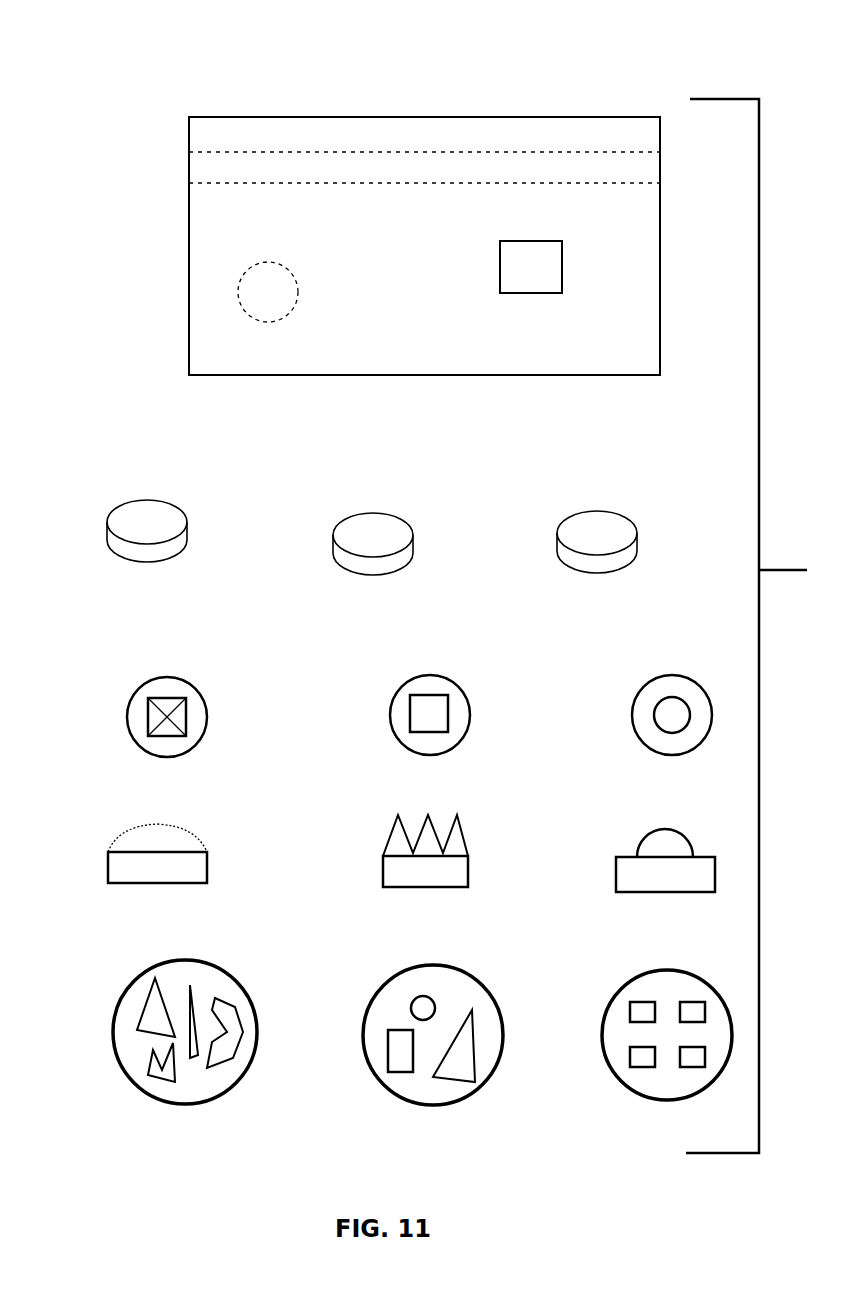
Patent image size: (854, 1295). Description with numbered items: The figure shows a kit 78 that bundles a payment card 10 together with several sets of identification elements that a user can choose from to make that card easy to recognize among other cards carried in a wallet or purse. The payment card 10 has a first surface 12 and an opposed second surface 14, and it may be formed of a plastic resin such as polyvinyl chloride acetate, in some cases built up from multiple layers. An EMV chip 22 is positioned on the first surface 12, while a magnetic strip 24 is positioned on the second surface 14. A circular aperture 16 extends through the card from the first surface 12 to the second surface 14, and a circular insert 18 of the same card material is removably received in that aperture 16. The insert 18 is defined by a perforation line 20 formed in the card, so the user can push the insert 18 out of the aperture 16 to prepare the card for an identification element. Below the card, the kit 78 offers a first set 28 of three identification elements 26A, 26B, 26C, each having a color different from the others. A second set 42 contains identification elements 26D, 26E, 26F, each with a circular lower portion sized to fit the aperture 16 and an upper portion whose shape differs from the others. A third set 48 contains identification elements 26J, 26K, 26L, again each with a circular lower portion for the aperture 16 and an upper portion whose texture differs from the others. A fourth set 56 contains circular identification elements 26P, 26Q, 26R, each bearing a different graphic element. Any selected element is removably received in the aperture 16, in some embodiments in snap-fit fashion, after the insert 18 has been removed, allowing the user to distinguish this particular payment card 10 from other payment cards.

The kit 78 is at (692, 71).
The payment card 10 is at (424, 248).
The first surface 12 is at (608, 358).
The second surface 14 is at (315, 72).
The aperture 16 is at (308, 317).
The insert 18 is at (272, 292).
The perforation line 20 is at (279, 263).
The EMV chip 22 is at (523, 275).
The magnetic strip 24 is at (395, 175).
The first set 28 is at (166, 482).
The identification element 26A is at (186, 527).
The identification element 26B is at (413, 533).
The identification element 26C is at (637, 530).
The second set 42 is at (147, 660).
The identification element 26D is at (189, 667).
The identification element 26E is at (462, 657).
The identification element 26F is at (700, 660).
The third set 48 is at (153, 913).
The identification element 26J is at (183, 817).
The identification element 26K is at (439, 810).
The identification element 26L is at (684, 808).
The fourth set 56 is at (183, 1134).
The identification element 26P is at (247, 971).
The identification element 26Q is at (481, 971).
The identification element 26R is at (686, 950).